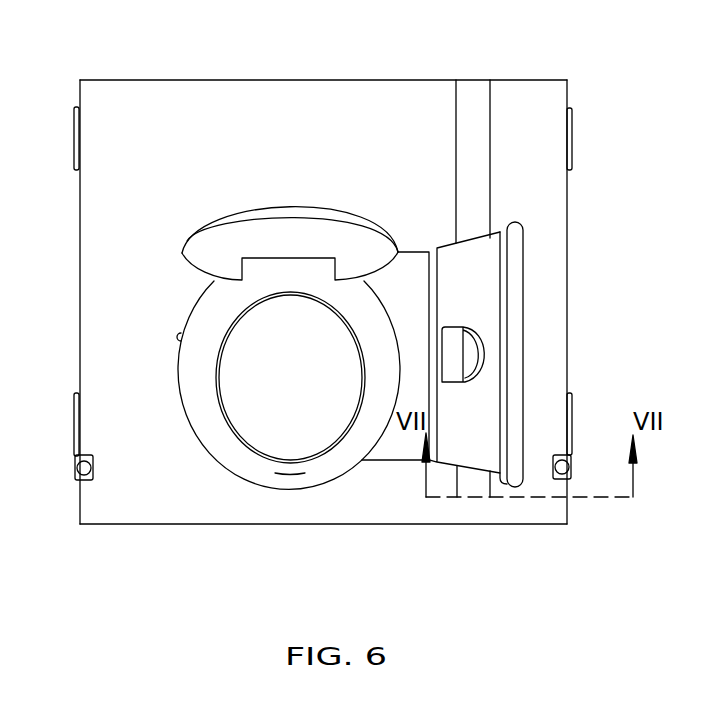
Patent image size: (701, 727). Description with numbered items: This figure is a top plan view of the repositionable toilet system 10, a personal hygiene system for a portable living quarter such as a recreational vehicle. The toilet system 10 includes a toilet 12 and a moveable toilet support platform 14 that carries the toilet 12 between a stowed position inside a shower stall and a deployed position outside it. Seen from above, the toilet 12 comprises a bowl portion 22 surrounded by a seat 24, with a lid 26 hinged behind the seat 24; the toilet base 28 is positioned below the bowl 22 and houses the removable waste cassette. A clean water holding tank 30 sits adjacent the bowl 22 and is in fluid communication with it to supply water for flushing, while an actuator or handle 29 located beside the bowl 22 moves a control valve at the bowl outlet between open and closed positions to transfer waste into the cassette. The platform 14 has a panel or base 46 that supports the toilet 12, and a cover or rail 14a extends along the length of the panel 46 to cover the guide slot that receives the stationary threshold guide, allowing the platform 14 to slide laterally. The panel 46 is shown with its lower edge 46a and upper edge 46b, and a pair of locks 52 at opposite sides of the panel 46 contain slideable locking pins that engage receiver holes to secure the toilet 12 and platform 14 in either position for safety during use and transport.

The repositionable toilet system 10 is at (624, 115).
The toilet 12 is at (155, 242).
The moveable toilet support platform 14 is at (426, 77).
The cover or rail 14a is at (470, 143).
The bowl portion 22 is at (306, 393).
The seat 24 is at (375, 327).
The lid 26 is at (315, 228).
The toilet base 28 is at (378, 462).
The actuator or handle 29 is at (463, 382).
The clean water holding tank 30 is at (497, 283).
The panel or base 46 is at (160, 379).
The bottom edge of mounting plate 46a is at (133, 529).
The top edge of mounting plate 46b is at (76, 84).
The locks 52 is at (91, 468).